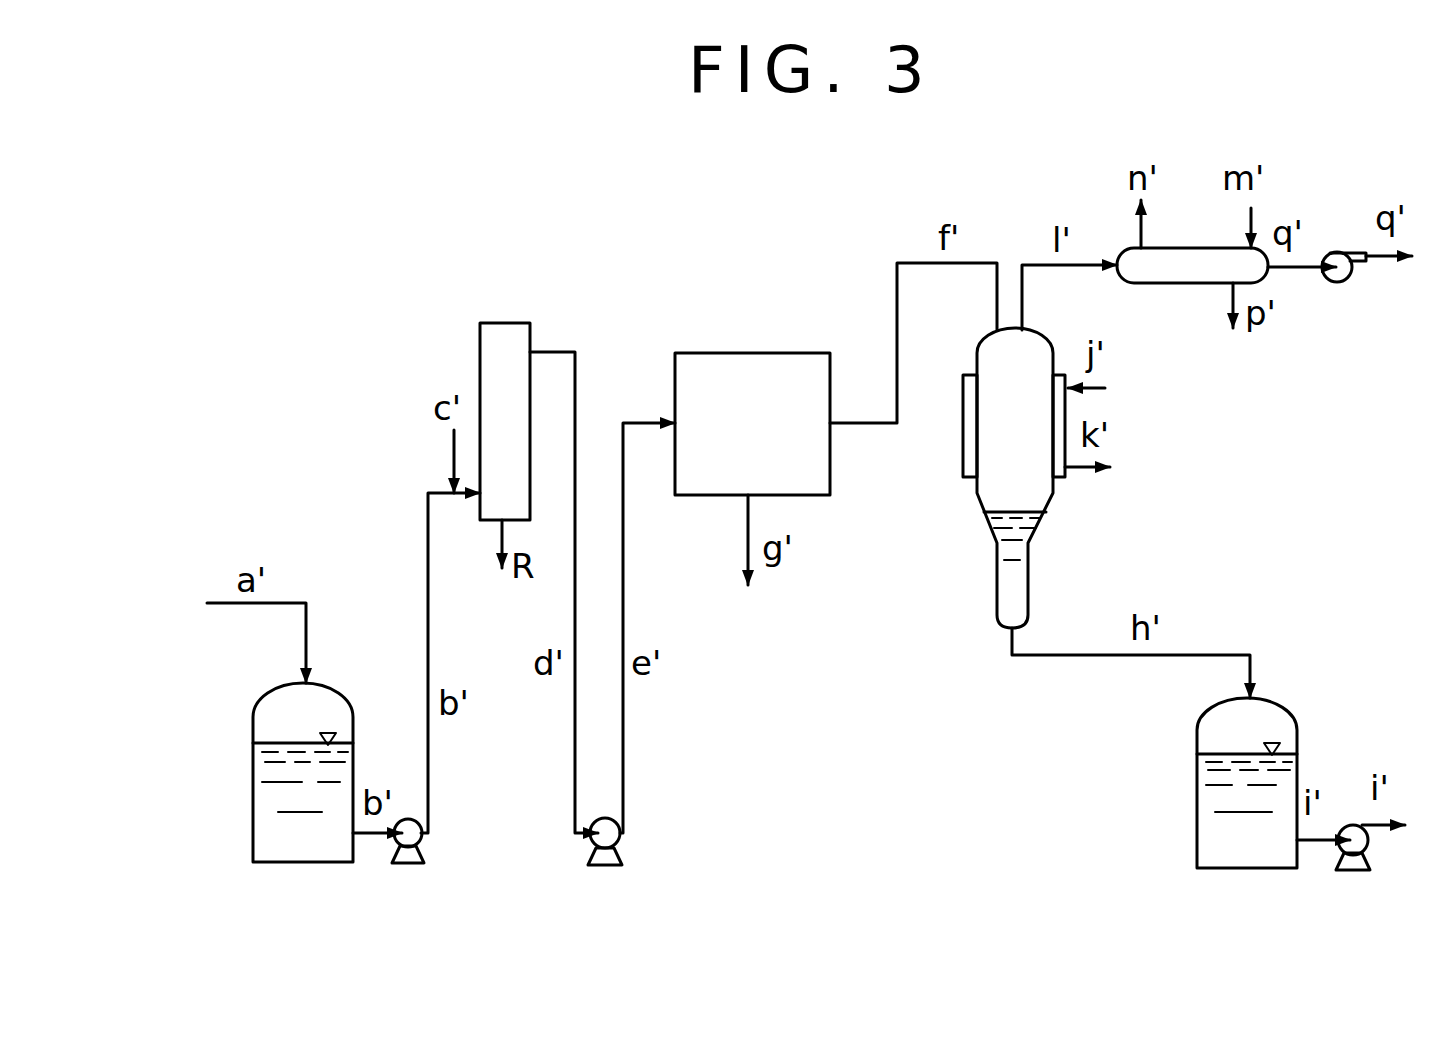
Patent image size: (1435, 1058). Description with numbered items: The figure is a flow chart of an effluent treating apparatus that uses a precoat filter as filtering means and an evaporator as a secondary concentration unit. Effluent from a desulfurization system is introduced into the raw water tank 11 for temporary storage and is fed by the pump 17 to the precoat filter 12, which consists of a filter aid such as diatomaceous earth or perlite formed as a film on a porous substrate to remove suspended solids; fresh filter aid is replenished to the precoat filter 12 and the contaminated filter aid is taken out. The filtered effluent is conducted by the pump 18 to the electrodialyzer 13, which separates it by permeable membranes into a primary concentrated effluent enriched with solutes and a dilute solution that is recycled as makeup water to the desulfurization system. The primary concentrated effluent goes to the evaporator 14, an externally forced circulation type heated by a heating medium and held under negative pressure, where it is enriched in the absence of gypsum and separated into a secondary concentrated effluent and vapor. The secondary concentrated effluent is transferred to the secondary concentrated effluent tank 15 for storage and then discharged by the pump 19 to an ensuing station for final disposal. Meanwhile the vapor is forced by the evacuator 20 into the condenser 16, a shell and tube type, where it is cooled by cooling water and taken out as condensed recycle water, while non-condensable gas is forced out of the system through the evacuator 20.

The raw water tank 11 is at (262, 866).
The precoat filter 12 is at (512, 323).
The electrodialyzer 13 is at (726, 353).
The evaporator 14 is at (1037, 522).
The secondary concentrated effluent tank 15 is at (1282, 708).
The condenser 16 is at (1190, 283).
The pump 17 is at (423, 857).
The pump 18 is at (620, 852).
The pump 19 is at (1357, 872).
The evacuator 20 is at (1342, 252).